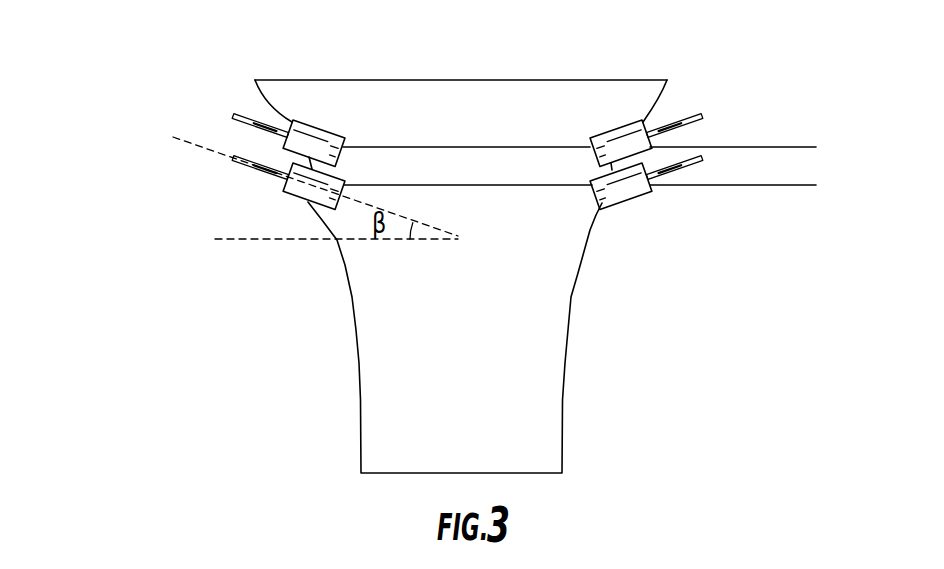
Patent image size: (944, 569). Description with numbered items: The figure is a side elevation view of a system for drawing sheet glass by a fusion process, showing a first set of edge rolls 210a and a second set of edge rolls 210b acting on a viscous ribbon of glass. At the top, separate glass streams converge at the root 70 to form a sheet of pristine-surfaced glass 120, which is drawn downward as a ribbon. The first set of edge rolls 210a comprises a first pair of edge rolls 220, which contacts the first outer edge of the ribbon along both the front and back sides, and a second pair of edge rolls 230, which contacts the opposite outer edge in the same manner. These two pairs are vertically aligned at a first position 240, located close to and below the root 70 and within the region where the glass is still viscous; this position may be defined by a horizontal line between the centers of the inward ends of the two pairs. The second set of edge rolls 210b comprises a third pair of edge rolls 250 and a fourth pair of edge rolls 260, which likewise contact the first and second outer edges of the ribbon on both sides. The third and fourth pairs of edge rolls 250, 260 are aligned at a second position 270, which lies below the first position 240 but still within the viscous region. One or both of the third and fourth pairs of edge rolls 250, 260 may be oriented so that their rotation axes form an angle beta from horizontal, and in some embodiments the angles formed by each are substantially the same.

The root 70 is at (628, 80).
The sheet of pristine-surfaced glass 120 is at (557, 268).
The first set of edge rolls 210a is at (177, 125).
The second set of edge rolls 210b is at (165, 170).
The first pair of edge rolls 220 is at (318, 122).
The second pair of edge rolls 230 is at (645, 122).
The first position 240 is at (772, 147).
The third pair of edge rolls 250 is at (310, 200).
The fourth pair of edge rolls 260 is at (632, 195).
The second position 270 is at (793, 185).